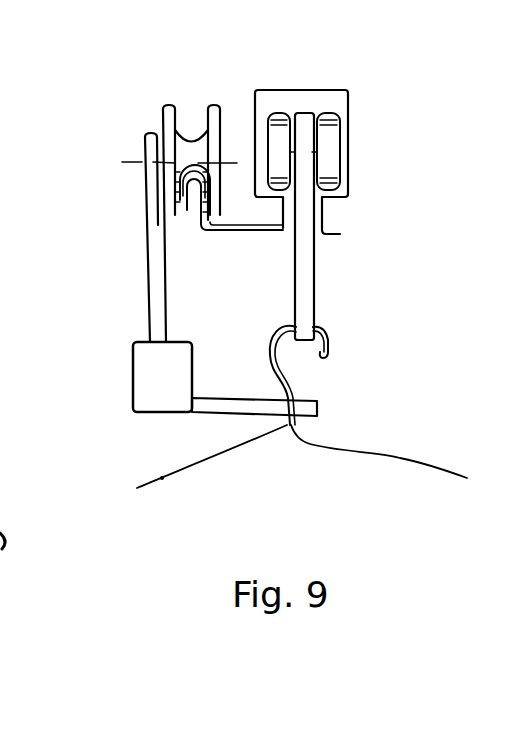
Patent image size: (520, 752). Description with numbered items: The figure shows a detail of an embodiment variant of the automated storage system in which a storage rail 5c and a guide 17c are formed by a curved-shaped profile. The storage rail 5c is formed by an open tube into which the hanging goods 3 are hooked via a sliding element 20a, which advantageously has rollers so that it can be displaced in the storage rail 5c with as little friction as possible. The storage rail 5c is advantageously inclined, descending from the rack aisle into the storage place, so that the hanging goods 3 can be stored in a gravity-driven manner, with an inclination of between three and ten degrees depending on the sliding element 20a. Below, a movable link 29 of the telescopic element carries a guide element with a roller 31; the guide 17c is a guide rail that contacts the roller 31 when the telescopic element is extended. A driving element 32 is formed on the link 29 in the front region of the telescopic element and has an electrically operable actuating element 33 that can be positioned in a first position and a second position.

The hanging goods 3 is at (307, 442).
The storage rail 5c is at (347, 117).
The guide 17c is at (198, 193).
The sliding element 20a is at (310, 252).
The link 29 is at (122, 360).
The roller 31 is at (193, 150).
The driving element 32 is at (148, 432).
The actuating element 33 is at (215, 405).